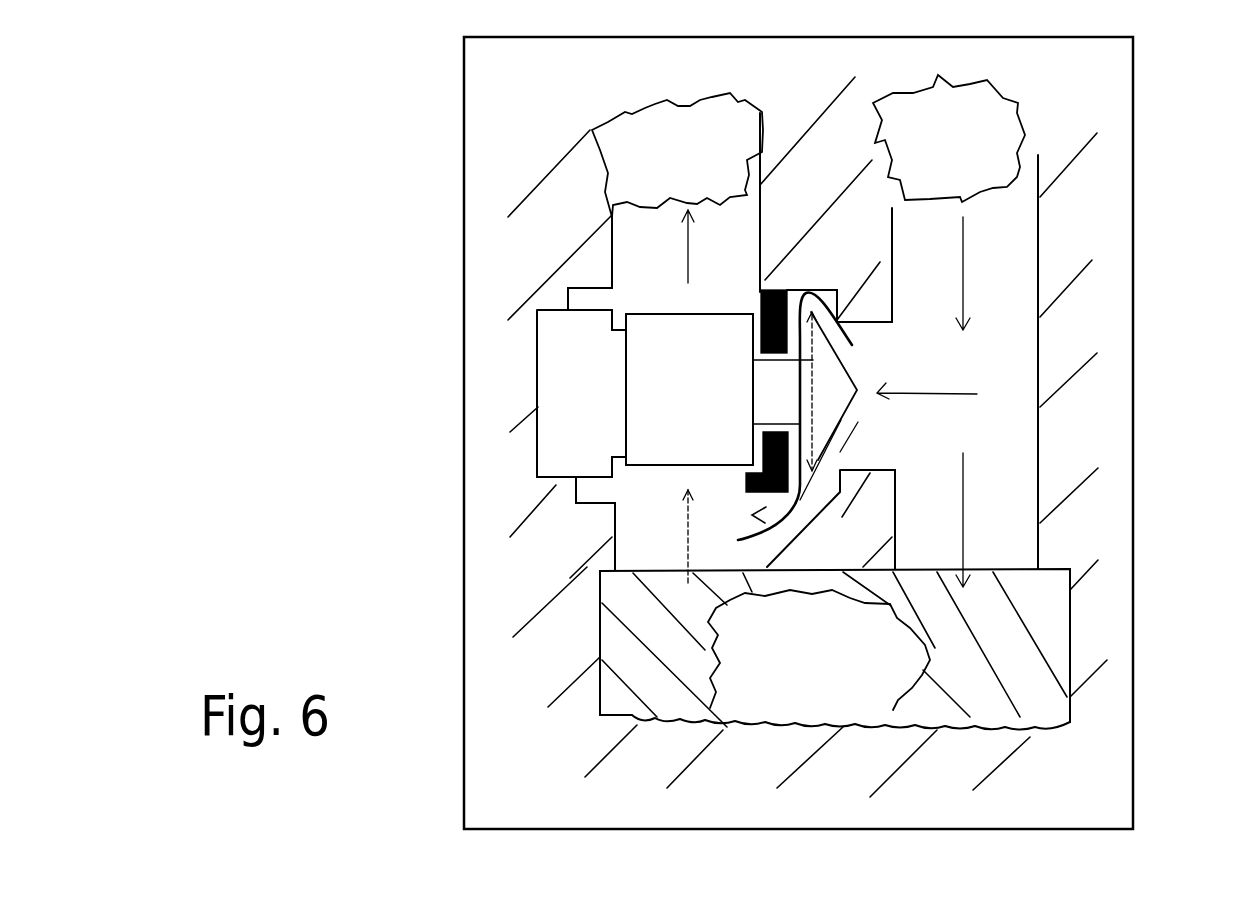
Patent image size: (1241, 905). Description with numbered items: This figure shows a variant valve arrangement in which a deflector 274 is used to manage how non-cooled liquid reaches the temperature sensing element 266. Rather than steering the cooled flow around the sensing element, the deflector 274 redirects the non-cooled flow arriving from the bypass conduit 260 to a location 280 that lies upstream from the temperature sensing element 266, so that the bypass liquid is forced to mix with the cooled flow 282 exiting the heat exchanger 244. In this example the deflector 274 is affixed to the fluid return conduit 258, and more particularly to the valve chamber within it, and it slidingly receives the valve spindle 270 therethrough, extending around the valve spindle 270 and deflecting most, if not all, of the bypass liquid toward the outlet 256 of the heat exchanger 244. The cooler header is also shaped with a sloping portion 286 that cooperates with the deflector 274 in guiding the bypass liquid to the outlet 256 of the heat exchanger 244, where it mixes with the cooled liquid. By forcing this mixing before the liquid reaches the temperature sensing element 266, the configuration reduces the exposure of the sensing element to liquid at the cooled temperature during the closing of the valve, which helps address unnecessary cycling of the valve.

The heat exchanger 244 is at (817, 647).
The outlet of the heat exchanger 256 is at (663, 577).
The fluid return conduit 258 is at (762, 291).
The bypass conduit 260 is at (873, 432).
The temperature sensing element 266 is at (728, 424).
The valve spindle 270 is at (807, 410).
The deflector 274 is at (746, 488).
The location upstream from the temperature sensing element 280 is at (752, 556).
The cooled flow 282 is at (685, 543).
The sloping portion 286 is at (795, 533).